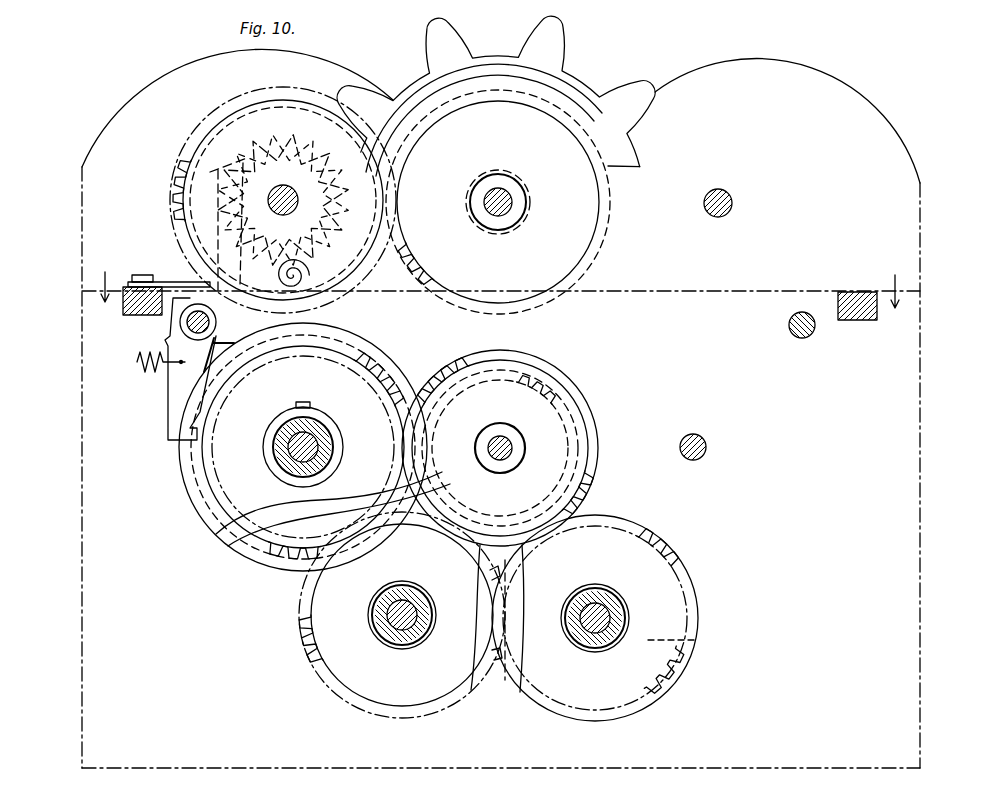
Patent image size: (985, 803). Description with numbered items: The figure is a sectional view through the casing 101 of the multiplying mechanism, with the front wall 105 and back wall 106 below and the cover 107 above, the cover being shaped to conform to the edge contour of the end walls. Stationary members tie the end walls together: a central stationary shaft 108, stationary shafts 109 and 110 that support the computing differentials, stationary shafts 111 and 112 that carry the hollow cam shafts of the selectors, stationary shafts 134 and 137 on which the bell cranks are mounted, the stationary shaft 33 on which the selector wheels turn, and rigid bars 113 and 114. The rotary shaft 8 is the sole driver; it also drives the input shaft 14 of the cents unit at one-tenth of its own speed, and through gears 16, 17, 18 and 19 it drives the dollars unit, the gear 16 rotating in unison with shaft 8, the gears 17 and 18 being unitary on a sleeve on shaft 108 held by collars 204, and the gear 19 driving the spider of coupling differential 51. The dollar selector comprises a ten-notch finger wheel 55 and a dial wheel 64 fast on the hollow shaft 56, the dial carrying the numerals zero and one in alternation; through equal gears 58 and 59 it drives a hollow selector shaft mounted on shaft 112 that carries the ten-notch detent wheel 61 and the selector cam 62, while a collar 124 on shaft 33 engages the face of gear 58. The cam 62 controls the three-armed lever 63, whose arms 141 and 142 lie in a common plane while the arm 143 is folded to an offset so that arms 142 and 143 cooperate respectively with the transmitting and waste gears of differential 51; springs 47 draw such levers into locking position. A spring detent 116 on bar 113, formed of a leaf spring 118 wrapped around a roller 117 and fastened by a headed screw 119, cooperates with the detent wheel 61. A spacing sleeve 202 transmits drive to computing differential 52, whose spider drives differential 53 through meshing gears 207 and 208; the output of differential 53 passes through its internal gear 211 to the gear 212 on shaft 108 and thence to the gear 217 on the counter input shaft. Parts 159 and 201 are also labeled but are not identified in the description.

The shaft 8 is at (347, 432).
The input shaft 14 is at (707, 447).
The gear 16 is at (182, 474).
The gear 17 is at (484, 355).
The gear 18 is at (560, 400).
The gear 19 is at (373, 350).
The stationary shaft 33 is at (502, 194).
The spring 47 is at (146, 375).
The coupling differential 51 is at (287, 564).
The computing differential 52 is at (299, 676).
The differential gear 53 is at (708, 576).
The finger wheel 55 is at (440, 45).
The hollow shaft 56 is at (486, 176).
The gear 58 is at (456, 302).
The gear 59 is at (270, 96).
The detent wheel 61 is at (258, 140).
The selector cam 62 is at (252, 162).
The three-armed lever 63 is at (180, 260).
The dial wheel 64 is at (500, 78).
The casing 101 is at (935, 338).
The front wall 105 is at (82, 432).
The back wall 106 is at (922, 526).
The cover 107 is at (906, 154).
The central stationary shaft 108 is at (514, 442).
The stationary shaft 109 is at (399, 628).
The stationary shaft 110 is at (592, 630).
The stationary shaft 111 is at (286, 194).
The stationary shaft 112 is at (718, 190).
The rigid bar 113 is at (124, 308).
The rigid bar 114 is at (856, 292).
The spring detent 116 is at (170, 280).
The roller 117 is at (312, 272).
The leaf spring 118 is at (240, 285).
The headed screw 119 is at (126, 276).
The collar 124 is at (532, 205).
The stationary shaft 134 is at (802, 338).
The stationary shaft 137 is at (188, 326).
The arm 141 is at (172, 205).
The arm 142 is at (228, 340).
The arm 143 is at (170, 420).
The hub 159 is at (280, 437).
The hub 201 is at (616, 614).
The spacing sleeve 202 is at (298, 405).
The collar 204 is at (484, 437).
The gear 207 is at (498, 680).
The gear 208 is at (508, 676).
The internal gear 211 is at (664, 548).
The gear 212 is at (592, 492).
The gear 217 is at (677, 676).